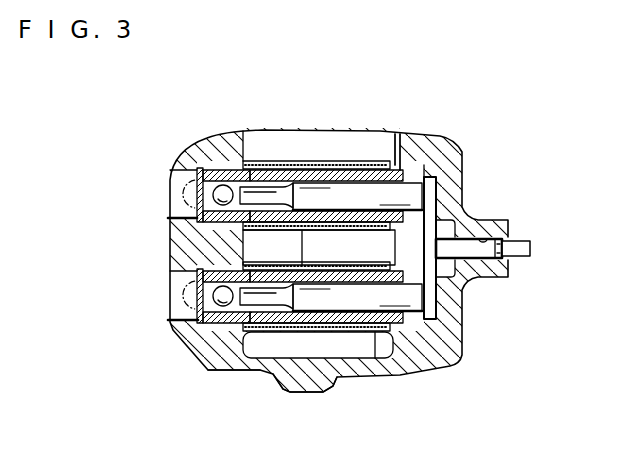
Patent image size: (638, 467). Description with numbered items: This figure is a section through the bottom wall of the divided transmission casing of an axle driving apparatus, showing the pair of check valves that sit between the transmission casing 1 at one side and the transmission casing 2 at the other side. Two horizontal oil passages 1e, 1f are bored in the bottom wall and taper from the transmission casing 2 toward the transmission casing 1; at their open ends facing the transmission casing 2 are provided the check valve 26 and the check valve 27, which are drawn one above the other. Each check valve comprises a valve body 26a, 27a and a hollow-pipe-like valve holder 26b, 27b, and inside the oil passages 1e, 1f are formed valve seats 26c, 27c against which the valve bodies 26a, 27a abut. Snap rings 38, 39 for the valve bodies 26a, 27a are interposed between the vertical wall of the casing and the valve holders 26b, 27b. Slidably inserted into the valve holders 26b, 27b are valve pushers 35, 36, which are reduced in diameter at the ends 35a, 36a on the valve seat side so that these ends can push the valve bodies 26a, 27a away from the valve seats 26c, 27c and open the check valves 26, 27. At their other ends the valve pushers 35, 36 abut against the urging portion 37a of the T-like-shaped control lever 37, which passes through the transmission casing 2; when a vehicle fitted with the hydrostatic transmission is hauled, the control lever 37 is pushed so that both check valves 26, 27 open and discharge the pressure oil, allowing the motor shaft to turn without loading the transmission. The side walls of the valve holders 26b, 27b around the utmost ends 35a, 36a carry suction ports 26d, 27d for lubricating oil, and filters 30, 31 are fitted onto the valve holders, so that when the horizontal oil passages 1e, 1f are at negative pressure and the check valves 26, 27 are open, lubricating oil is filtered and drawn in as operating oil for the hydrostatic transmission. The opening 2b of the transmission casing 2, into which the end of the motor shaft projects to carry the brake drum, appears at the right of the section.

The transmission casing at one side 1 is at (293, 391).
The horizontal oil passage 1e is at (172, 322).
The horizontal oil passage 1f is at (180, 216).
The transmission casing at the other side 2 is at (452, 366).
The opening 2b is at (500, 218).
The check valve 26 is at (364, 346).
The valve body 26a is at (215, 335).
The valve holder 26b is at (395, 265).
The valve seat 26c is at (213, 323).
The suction port 26d is at (262, 360).
The check valve 27 is at (348, 152).
The valve body 27a is at (216, 170).
The valve holder 27b is at (423, 152).
The valve seat 27c is at (227, 168).
The suction port 27d is at (286, 160).
The filter 30 is at (377, 334).
The filter 31 is at (383, 150).
The valve pusher 35 is at (331, 299).
The reduced-diameter end of valve pusher 35a is at (279, 335).
The valve pusher 36 is at (357, 198).
The reduced-diameter end of valve pusher 36a is at (271, 200).
The control lever 37 is at (535, 258).
The urging portion 37a is at (430, 200).
The snap ring 38 is at (180, 320).
The snap ring 39 is at (178, 199).